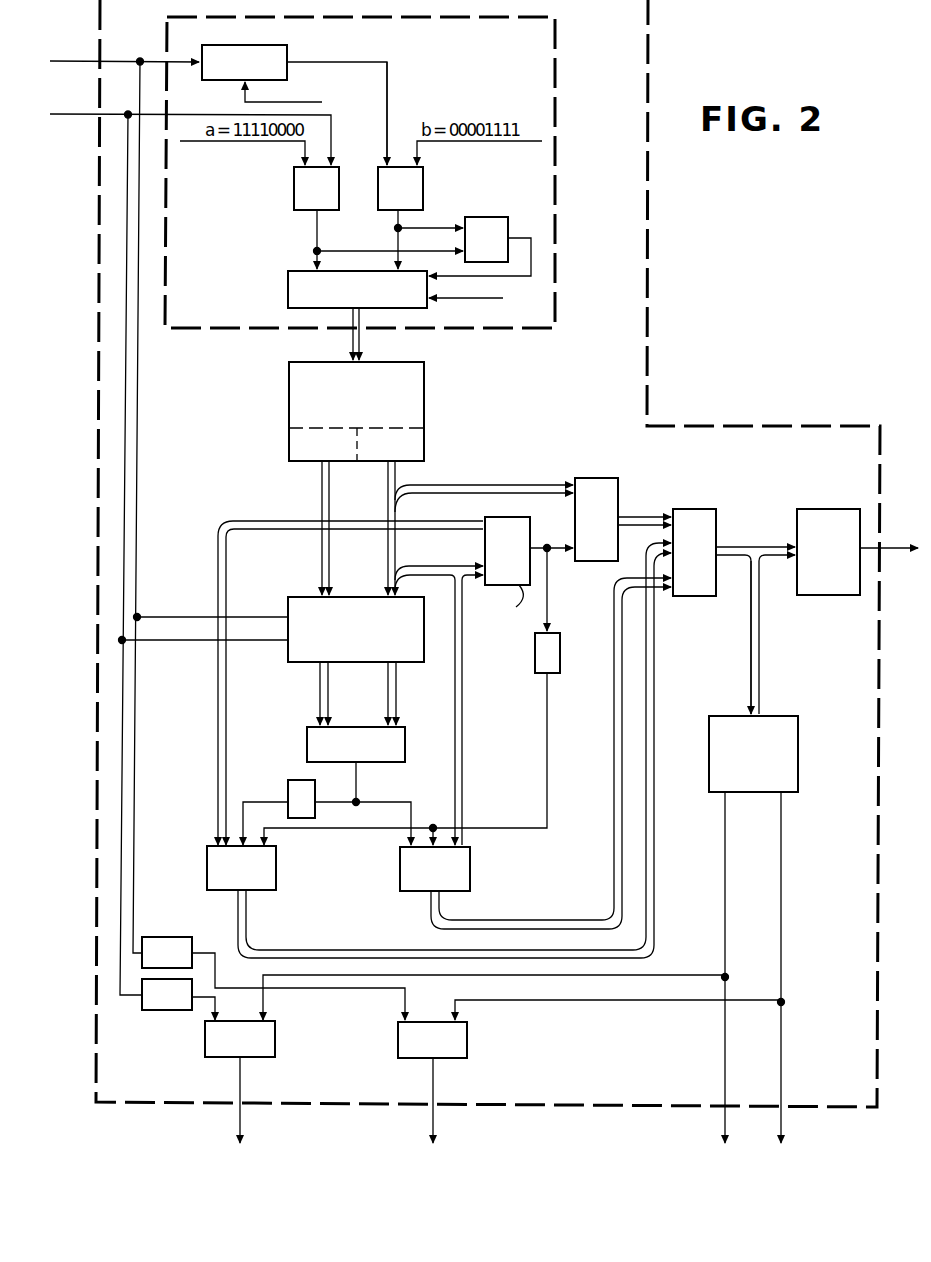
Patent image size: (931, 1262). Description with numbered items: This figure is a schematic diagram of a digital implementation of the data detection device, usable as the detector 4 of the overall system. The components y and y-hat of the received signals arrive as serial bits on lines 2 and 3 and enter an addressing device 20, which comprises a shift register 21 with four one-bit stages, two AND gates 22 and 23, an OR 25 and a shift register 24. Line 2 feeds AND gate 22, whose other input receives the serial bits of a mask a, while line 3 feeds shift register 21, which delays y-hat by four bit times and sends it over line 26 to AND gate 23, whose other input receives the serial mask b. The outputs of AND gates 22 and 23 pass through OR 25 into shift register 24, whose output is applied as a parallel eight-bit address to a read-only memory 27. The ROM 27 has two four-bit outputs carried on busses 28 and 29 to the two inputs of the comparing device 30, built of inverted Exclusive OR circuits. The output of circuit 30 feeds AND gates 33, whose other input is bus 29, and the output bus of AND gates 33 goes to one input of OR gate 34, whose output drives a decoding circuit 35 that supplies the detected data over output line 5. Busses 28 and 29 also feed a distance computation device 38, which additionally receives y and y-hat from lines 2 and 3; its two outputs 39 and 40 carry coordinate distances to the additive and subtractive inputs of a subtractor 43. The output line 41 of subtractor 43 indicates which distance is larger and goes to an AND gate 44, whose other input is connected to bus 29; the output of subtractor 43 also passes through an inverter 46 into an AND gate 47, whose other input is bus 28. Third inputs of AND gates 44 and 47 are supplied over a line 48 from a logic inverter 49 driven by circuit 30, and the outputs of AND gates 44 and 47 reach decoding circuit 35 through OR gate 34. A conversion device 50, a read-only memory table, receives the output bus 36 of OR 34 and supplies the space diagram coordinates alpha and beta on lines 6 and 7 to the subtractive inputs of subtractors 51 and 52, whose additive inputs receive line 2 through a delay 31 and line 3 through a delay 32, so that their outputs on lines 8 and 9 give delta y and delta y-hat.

The input line 2 is at (75, 112).
The input line 3 is at (75, 58).
The detector 4 is at (648, 338).
The output line 5 is at (895, 548).
The output line 6 is at (723, 1079).
The output line 7 is at (783, 1091).
The output line 8 is at (238, 1079).
The output line 9 is at (431, 1080).
The addressing device 20 is at (556, 104).
The shift register 21 is at (294, 38).
The AND gate 22 is at (294, 187).
The AND gate 23 is at (424, 188).
The shift register 24 is at (288, 275).
The OR 25 is at (484, 217).
The line 26 is at (388, 97).
The read-only memory 27 is at (426, 393).
The bus 28 is at (322, 483).
The bus 29 is at (388, 474).
The inverted Exclusive OR circuit 30 is at (531, 524).
The delay 31 is at (165, 1010).
The delay 32 is at (170, 937).
The AND gates 33 is at (620, 491).
The OR gate 34 is at (705, 509).
The decoding circuit 35 is at (826, 509).
The output bus 36 is at (760, 651).
The distance computation device 38 is at (343, 641).
The output 39 is at (328, 700).
The output 40 is at (388, 698).
The output line 41 is at (358, 791).
The subtractor 43 is at (307, 745).
The AND gate 44 is at (472, 871).
The inverter 46 is at (288, 783).
The AND gate 47 is at (278, 867).
The inverter output line 48 is at (548, 743).
The logic inverter 49 is at (560, 651).
The conversion device 50 is at (786, 716).
The subtractor 51 is at (278, 1042).
The subtractor 52 is at (470, 1043).